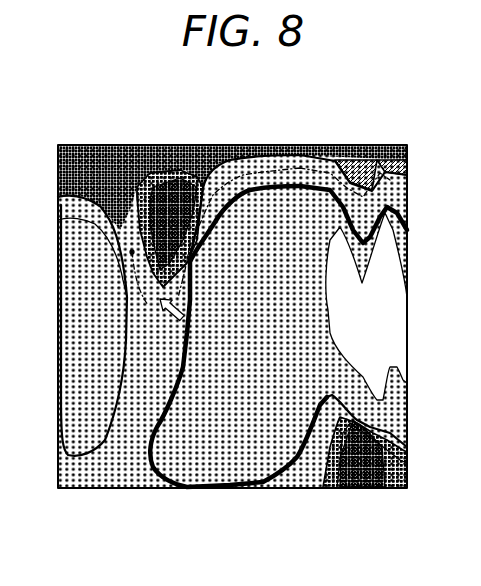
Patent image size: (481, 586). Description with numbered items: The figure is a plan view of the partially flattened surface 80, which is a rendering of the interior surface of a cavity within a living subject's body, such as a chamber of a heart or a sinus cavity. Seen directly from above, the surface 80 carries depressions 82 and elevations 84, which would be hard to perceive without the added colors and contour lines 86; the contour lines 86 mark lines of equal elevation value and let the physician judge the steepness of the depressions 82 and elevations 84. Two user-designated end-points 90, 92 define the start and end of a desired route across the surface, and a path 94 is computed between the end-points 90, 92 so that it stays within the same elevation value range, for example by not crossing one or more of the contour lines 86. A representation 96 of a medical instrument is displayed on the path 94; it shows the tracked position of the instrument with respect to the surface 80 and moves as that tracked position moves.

The partially flattened surface 80 is at (248, 173).
The depressions 82 is at (184, 170).
The elevations 84 is at (348, 335).
The contour lines 86 is at (79, 195).
The end-point 90 is at (131, 253).
The end-point 92 is at (398, 160).
The path 94 is at (289, 180).
The representation of a medical instrument 96 is at (184, 311).